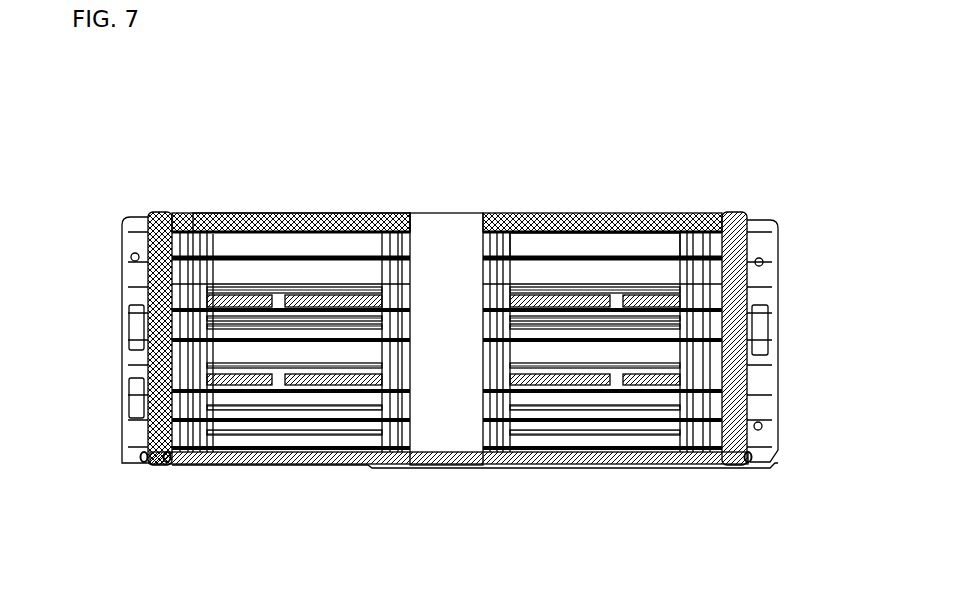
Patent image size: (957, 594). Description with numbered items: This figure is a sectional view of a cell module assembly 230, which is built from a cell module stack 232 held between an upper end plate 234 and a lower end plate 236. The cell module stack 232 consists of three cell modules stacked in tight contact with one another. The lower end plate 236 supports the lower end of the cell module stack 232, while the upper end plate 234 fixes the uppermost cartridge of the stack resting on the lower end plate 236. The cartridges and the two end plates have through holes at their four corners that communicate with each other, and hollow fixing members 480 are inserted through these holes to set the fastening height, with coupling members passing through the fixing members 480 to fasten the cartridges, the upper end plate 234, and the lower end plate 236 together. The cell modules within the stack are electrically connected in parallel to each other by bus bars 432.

The cell module assembly 230 is at (134, 127).
The cell module stack 232 is at (790, 213).
The upper end plate 234 is at (305, 224).
The lower end plate 236 is at (297, 465).
The bus bars 432 is at (622, 240).
The hollow fixing members 480 is at (134, 277).